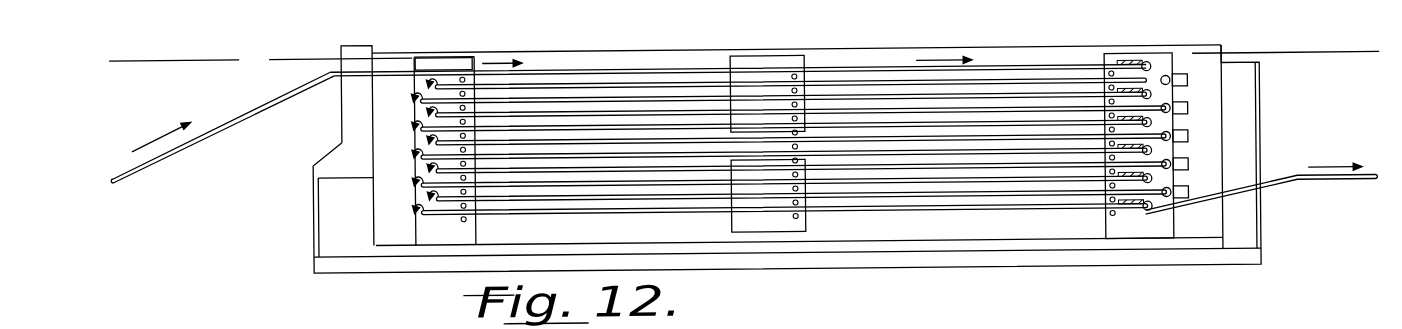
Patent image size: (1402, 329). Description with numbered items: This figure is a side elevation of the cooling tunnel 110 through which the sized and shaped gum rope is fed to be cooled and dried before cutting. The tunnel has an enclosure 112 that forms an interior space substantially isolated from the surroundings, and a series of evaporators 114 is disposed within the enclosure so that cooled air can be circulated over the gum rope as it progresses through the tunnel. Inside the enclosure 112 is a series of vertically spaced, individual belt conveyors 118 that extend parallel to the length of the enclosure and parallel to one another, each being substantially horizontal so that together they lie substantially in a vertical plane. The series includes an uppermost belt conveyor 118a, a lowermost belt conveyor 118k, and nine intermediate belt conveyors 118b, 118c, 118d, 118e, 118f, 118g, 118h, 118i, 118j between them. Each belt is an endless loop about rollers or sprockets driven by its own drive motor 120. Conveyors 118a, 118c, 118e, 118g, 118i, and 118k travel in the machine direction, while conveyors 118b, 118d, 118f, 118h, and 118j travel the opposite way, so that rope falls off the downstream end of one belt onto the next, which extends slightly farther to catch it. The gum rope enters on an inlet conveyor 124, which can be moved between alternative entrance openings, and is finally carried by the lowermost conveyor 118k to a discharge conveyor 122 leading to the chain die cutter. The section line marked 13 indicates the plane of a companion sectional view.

The section line 13- 13 is at (128, 90).
The cooling tunnel 110 is at (324, 31).
The enclosure 112 is at (906, 46).
The evaporators 114 is at (780, 60).
The belt conveyors 118 is at (547, 72).
The uppermost belt conveyor 118a is at (401, 56).
The belt conveyor 118b is at (490, 85).
The belt conveyor 118c is at (587, 99).
The belt conveyor 118d is at (437, 112).
The belt conveyor 118e is at (423, 129).
The belt conveyor 118f is at (425, 152).
The belt conveyor 118g is at (500, 153).
The belt conveyor 118h is at (565, 172).
The belt conveyor 118i is at (830, 186).
The belt conveyor 118j is at (905, 201).
The lowermost belt conveyor 118k is at (462, 215).
The drive motor 120 is at (1132, 68).
The discharge conveyor 122 is at (1320, 191).
The inlet conveyor 124 is at (263, 103).